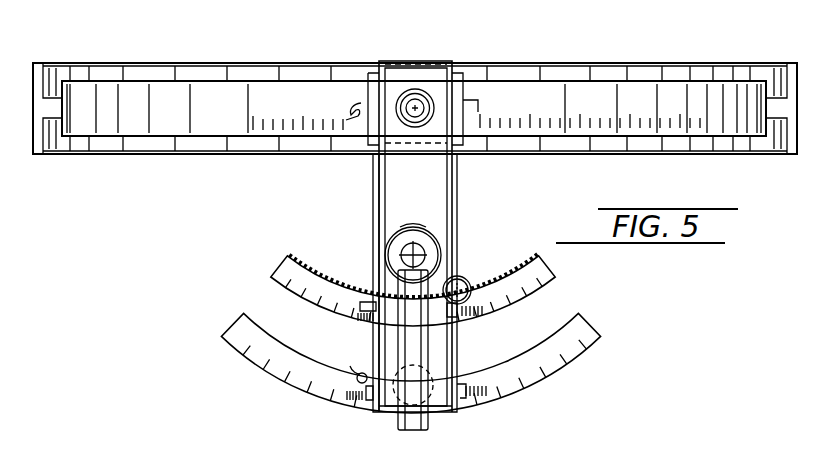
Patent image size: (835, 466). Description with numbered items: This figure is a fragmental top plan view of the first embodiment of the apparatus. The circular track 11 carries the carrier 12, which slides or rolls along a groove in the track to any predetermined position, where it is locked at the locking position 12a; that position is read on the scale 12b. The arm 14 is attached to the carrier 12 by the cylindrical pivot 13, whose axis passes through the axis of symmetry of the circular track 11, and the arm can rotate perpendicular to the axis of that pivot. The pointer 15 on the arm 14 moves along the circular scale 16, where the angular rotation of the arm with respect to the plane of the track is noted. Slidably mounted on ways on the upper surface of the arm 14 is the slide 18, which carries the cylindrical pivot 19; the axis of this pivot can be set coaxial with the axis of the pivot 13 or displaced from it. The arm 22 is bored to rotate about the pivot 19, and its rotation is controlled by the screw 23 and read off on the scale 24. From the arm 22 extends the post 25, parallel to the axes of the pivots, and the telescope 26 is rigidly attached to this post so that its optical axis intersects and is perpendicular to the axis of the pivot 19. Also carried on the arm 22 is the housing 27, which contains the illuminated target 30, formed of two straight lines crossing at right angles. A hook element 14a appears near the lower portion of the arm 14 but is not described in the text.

The circular track 11 is at (670, 63).
The carrier 12 is at (466, 84).
The locking position 12a is at (353, 112).
The scale 12b is at (536, 128).
The cylindrical pivot 13 is at (438, 75).
The cylindrical pivot 19 is at (418, 102).
The arm 14 is at (391, 48).
The stop hook 14a is at (356, 370).
The pointer 15 is at (462, 399).
The circular scale 16 is at (376, 208).
The slide 18 is at (377, 182).
The arm 22 is at (451, 184).
The screw 23 is at (466, 280).
The scale 24 is at (533, 293).
The post 25 is at (375, 401).
The telescope 26 is at (430, 342).
The housing 27 is at (413, 227).
The target 30 is at (400, 256).